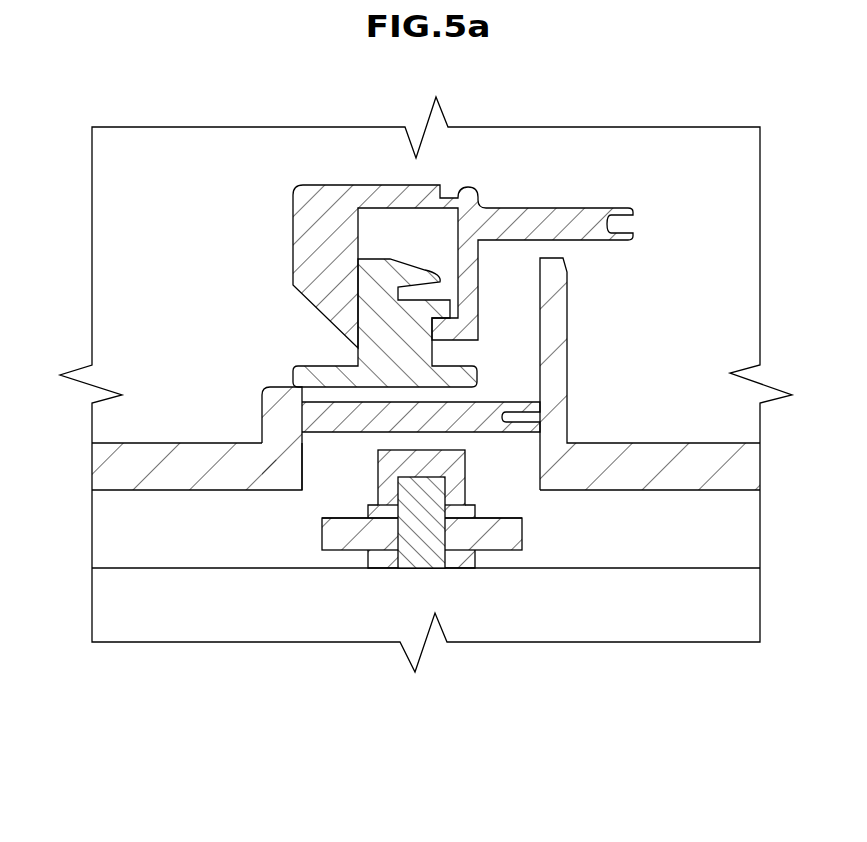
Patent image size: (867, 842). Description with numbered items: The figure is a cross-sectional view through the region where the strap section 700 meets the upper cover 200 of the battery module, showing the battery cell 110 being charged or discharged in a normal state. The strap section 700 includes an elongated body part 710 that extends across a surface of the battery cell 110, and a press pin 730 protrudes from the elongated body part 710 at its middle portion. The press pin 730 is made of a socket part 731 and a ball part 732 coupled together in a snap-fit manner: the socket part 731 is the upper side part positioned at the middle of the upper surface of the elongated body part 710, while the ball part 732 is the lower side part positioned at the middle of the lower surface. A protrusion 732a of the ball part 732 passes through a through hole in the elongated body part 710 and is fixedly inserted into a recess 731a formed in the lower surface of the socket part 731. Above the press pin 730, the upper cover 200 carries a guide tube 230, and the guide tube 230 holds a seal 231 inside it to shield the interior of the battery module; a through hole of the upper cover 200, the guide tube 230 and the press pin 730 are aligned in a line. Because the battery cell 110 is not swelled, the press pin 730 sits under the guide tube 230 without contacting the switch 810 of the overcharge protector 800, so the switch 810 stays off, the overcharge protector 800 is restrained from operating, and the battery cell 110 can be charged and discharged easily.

The battery cell 110 is at (697, 612).
The upper cover 200 is at (723, 443).
The guide tube 230 is at (263, 420).
The seal 231 is at (497, 405).
The strap section 700 is at (419, 606).
The elongated body part 710 is at (493, 553).
The press pin 730 is at (378, 614).
The socket part 731 is at (377, 465).
The recess 731a is at (377, 492).
The ball part 732 is at (387, 567).
The protrusion 732a is at (430, 568).
The overcharge protector 800 is at (313, 237).
The switch 810 is at (357, 368).